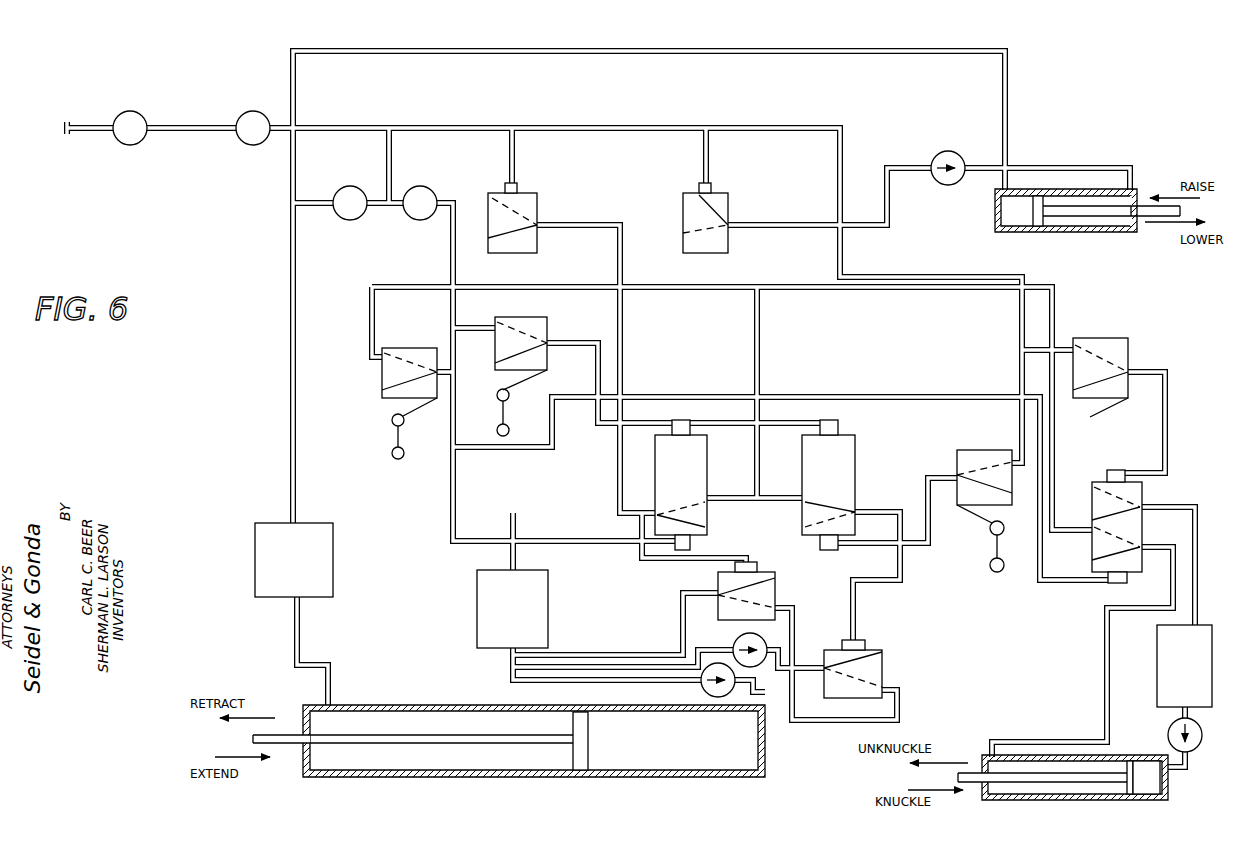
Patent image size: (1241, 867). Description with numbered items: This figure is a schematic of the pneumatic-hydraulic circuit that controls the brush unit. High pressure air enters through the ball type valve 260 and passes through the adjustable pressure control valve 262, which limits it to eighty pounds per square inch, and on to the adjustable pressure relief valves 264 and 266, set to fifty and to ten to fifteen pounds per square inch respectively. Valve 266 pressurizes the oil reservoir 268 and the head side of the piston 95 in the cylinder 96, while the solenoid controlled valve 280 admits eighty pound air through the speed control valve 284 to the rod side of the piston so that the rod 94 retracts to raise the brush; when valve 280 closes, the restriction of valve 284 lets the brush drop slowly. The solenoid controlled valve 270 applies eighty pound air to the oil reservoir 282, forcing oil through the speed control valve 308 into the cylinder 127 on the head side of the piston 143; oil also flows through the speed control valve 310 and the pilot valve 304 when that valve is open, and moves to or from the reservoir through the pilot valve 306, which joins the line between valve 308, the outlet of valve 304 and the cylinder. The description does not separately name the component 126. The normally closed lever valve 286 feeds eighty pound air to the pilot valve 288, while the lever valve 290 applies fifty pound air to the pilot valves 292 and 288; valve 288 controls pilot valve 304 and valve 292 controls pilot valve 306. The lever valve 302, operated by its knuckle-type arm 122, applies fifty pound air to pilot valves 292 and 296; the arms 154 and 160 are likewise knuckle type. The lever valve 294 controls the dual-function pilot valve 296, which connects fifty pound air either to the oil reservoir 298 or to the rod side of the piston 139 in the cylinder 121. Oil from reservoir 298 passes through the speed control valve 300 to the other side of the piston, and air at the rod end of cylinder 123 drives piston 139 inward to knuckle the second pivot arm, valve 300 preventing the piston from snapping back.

The rod 94 is at (1087, 211).
The piston 95 is at (1037, 230).
The cylinder 96 is at (1063, 232).
The cylinder 121 is at (1081, 793).
The arm 122 is at (392, 436).
The cylinder 123 is at (1035, 780).
The extend cylinder 126 is at (509, 730).
The cylinder 127 is at (622, 778).
The piston 139 is at (1132, 803).
The piston 143 is at (583, 770).
The arm 154 is at (503, 408).
The arm 160 is at (992, 550).
The valve 260 is at (148, 110).
The adjustable pressure control valve 262 is at (246, 112).
The adjustable pressure relief valve 264 is at (424, 187).
The adjustable pressure relief valve 266 is at (345, 187).
The oil reservoir 268 is at (333, 556).
The solenoid controlled valve 270 is at (540, 203).
The solenoid controlled valve 280 is at (730, 205).
The oil reservoir 282 is at (548, 607).
The speed control valve 284 is at (975, 150).
The lever valve 286 is at (998, 450).
The pilot valve 288 is at (855, 440).
The lever valve 290 is at (532, 317).
The pilot valve 292 is at (707, 445).
The lever valve 294 is at (1107, 338).
The pilot valve 296 is at (1142, 494).
The oil reservoir 298 is at (1212, 636).
The speed control valve 300 is at (1167, 734).
The lever valve 302 is at (384, 372).
The pilot valve 304 is at (885, 662).
The pilot valve 306 is at (775, 581).
The speed control valve 308 is at (700, 682).
The speed control valve 310 is at (742, 637).